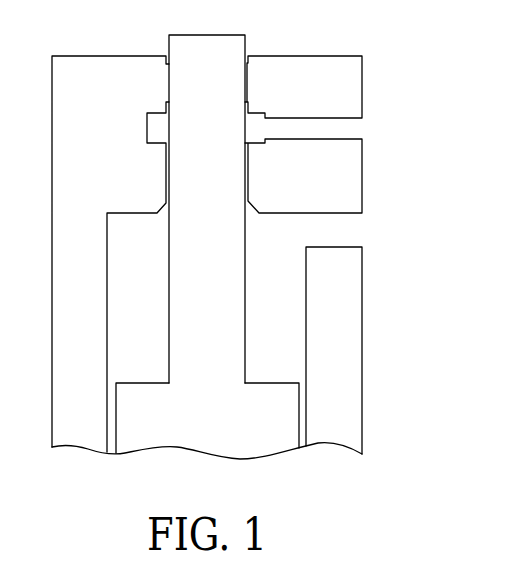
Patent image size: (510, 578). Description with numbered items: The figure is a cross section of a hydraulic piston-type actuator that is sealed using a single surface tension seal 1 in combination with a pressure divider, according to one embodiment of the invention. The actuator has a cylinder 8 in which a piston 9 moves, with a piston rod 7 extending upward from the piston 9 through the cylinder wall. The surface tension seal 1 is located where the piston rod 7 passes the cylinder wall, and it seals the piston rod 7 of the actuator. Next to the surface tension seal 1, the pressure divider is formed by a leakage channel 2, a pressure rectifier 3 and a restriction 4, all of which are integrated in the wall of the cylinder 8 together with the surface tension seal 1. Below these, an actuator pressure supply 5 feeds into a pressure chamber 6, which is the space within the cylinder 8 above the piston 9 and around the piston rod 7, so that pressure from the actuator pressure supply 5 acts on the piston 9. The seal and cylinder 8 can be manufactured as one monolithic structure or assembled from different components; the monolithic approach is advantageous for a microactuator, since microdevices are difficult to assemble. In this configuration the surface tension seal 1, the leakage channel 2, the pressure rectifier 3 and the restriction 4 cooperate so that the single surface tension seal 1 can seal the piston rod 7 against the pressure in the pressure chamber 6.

The surface tension seal 1 is at (248, 81).
The leakage channel 2 is at (355, 126).
The pressure rectifier 3 is at (262, 129).
The restriction 4 is at (248, 173).
The actuator pressure supply 5 is at (348, 230).
The pressure chamber 6 is at (273, 261).
The piston rod 7 is at (217, 306).
The cylinder 8 is at (330, 402).
The piston 9 is at (220, 427).